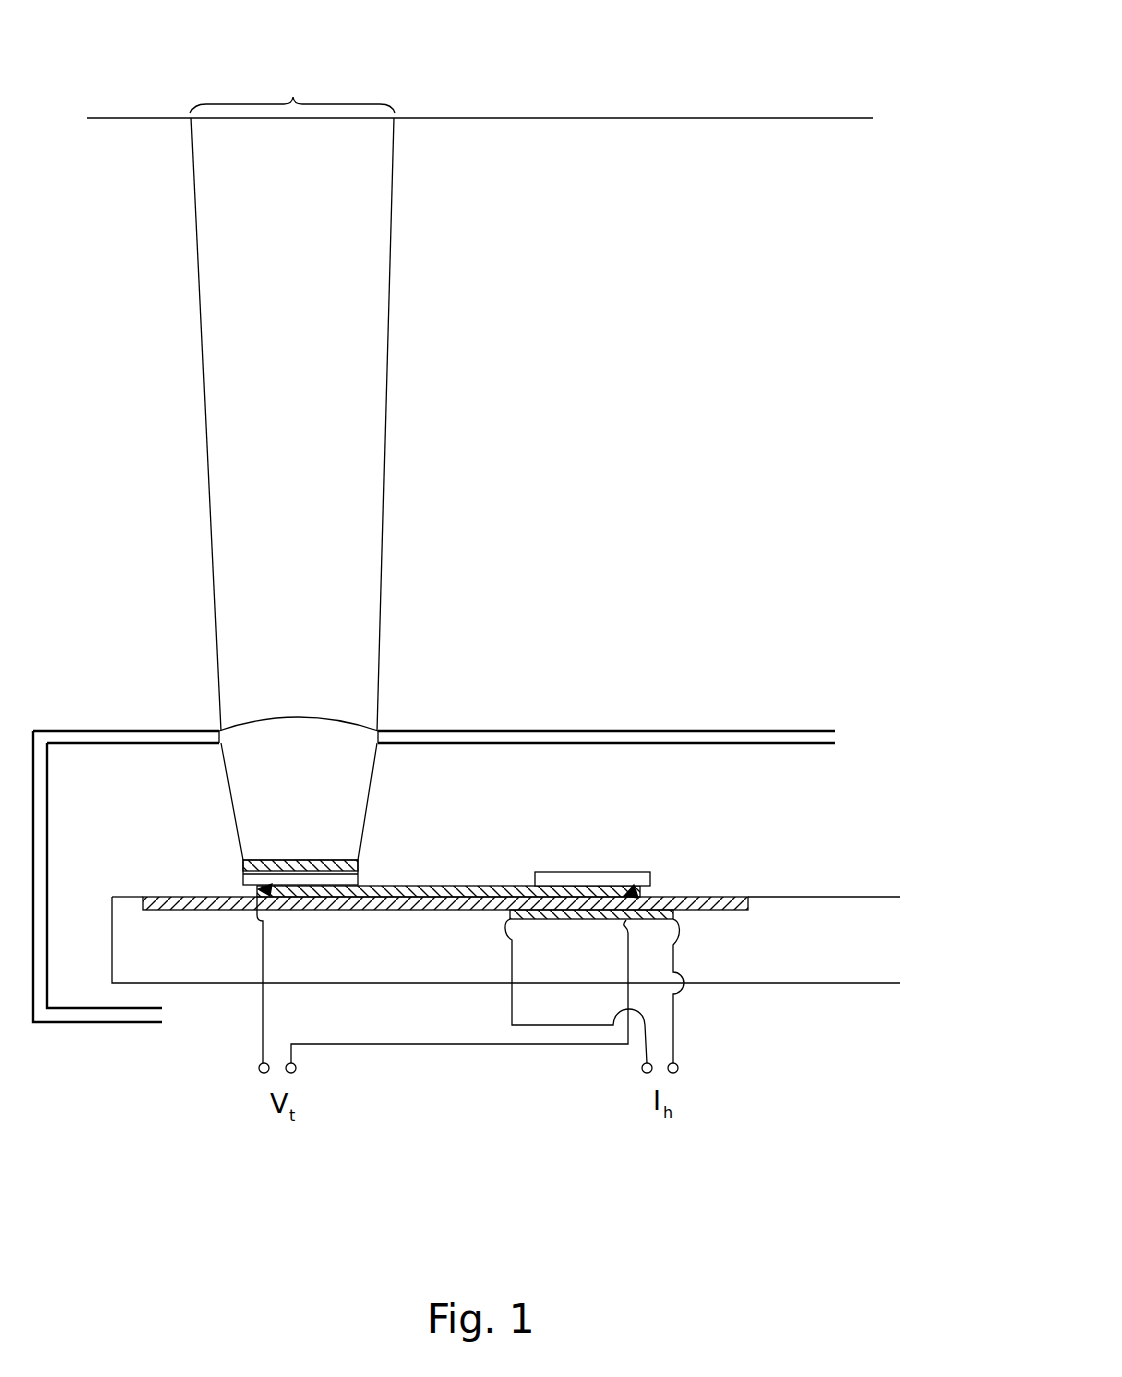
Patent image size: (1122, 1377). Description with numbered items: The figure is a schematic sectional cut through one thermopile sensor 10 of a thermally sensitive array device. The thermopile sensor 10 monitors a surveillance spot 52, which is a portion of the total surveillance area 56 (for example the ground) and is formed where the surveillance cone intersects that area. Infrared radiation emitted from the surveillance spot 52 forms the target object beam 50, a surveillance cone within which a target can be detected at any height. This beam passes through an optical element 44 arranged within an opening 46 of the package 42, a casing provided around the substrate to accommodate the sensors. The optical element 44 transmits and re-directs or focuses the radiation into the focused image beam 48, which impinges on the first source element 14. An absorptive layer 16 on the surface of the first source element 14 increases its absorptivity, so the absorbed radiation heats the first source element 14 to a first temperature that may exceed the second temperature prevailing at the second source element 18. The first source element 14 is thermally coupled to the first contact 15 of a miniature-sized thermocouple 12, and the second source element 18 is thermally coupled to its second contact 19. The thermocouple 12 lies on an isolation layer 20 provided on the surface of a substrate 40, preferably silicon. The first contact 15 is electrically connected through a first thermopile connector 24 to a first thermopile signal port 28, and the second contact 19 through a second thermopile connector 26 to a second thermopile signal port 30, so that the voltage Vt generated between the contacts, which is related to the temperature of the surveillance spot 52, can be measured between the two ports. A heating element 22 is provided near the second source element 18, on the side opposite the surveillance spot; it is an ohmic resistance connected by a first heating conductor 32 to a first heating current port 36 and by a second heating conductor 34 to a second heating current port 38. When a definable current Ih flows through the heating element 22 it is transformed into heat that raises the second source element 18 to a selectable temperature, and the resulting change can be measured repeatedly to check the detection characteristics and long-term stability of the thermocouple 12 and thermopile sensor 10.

The thermopile sensor 10 is at (808, 1142).
The thermocouple 12 is at (648, 890).
The first source element 14 is at (243, 878).
The first contact 15 is at (270, 892).
The absorptive layer 16 is at (243, 860).
The second source element 18 is at (655, 872).
The second contact 19 is at (630, 893).
The isolation layer 20 is at (755, 897).
The heating element 22 is at (670, 915).
The first thermopile connector 24 is at (262, 1013).
The second thermopile connector 26 is at (410, 1045).
The first thermopile signal port 28 is at (258, 1068).
The second thermopile signal port 30 is at (298, 1068).
The first heating conductor 32 is at (512, 1000).
The second heating conductor 34 is at (675, 1010).
The first heating current port 36 is at (640, 1068).
The second heating current port 38 is at (680, 1068).
The substrate 40 is at (830, 897).
The package 42 is at (697, 740).
The optical element 44 is at (253, 730).
The opening 46 is at (248, 745).
The focused image beam 48 is at (353, 783).
The target object beam 50 is at (368, 362).
The surveillance spot 52 is at (293, 97).
The surveillance area 56 is at (525, 118).